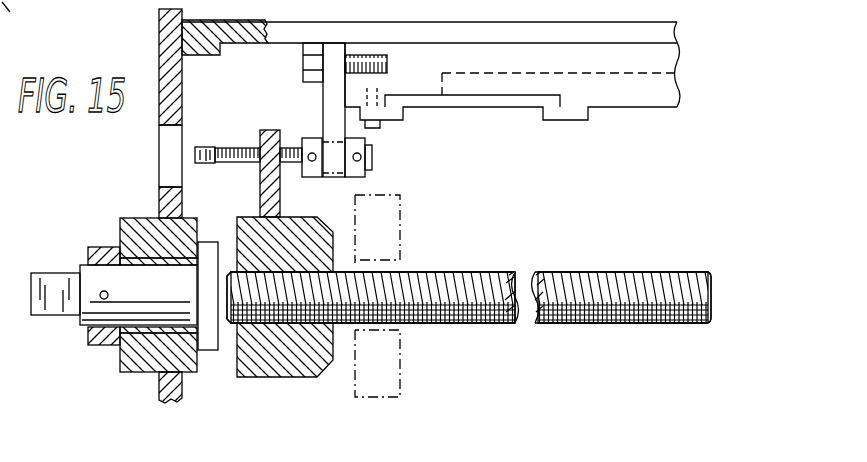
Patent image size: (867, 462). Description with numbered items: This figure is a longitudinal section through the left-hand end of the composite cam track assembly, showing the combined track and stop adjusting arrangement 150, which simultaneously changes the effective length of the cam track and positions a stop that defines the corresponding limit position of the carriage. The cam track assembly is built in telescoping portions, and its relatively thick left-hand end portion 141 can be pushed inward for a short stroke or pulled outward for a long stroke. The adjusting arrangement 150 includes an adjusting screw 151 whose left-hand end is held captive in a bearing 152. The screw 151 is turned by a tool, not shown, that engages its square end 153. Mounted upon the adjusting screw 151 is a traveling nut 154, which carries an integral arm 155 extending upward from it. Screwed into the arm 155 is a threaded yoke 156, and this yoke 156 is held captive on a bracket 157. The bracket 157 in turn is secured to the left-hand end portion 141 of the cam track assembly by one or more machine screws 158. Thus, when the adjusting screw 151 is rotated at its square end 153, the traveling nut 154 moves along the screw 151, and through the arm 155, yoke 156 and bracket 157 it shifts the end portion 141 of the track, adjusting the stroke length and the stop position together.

The left-hand end portion 141 is at (428, 53).
The combined track and stop adjusting arrangement 150 is at (424, 354).
The adjusting screw 151 is at (443, 282).
The bearing 152 is at (135, 228).
The square end 153 is at (55, 280).
The traveling nut 154 is at (311, 218).
The integral arm 155 is at (263, 187).
The threaded yoke 156 is at (238, 147).
The bracket 157 is at (333, 100).
The machine screws 158 is at (313, 63).